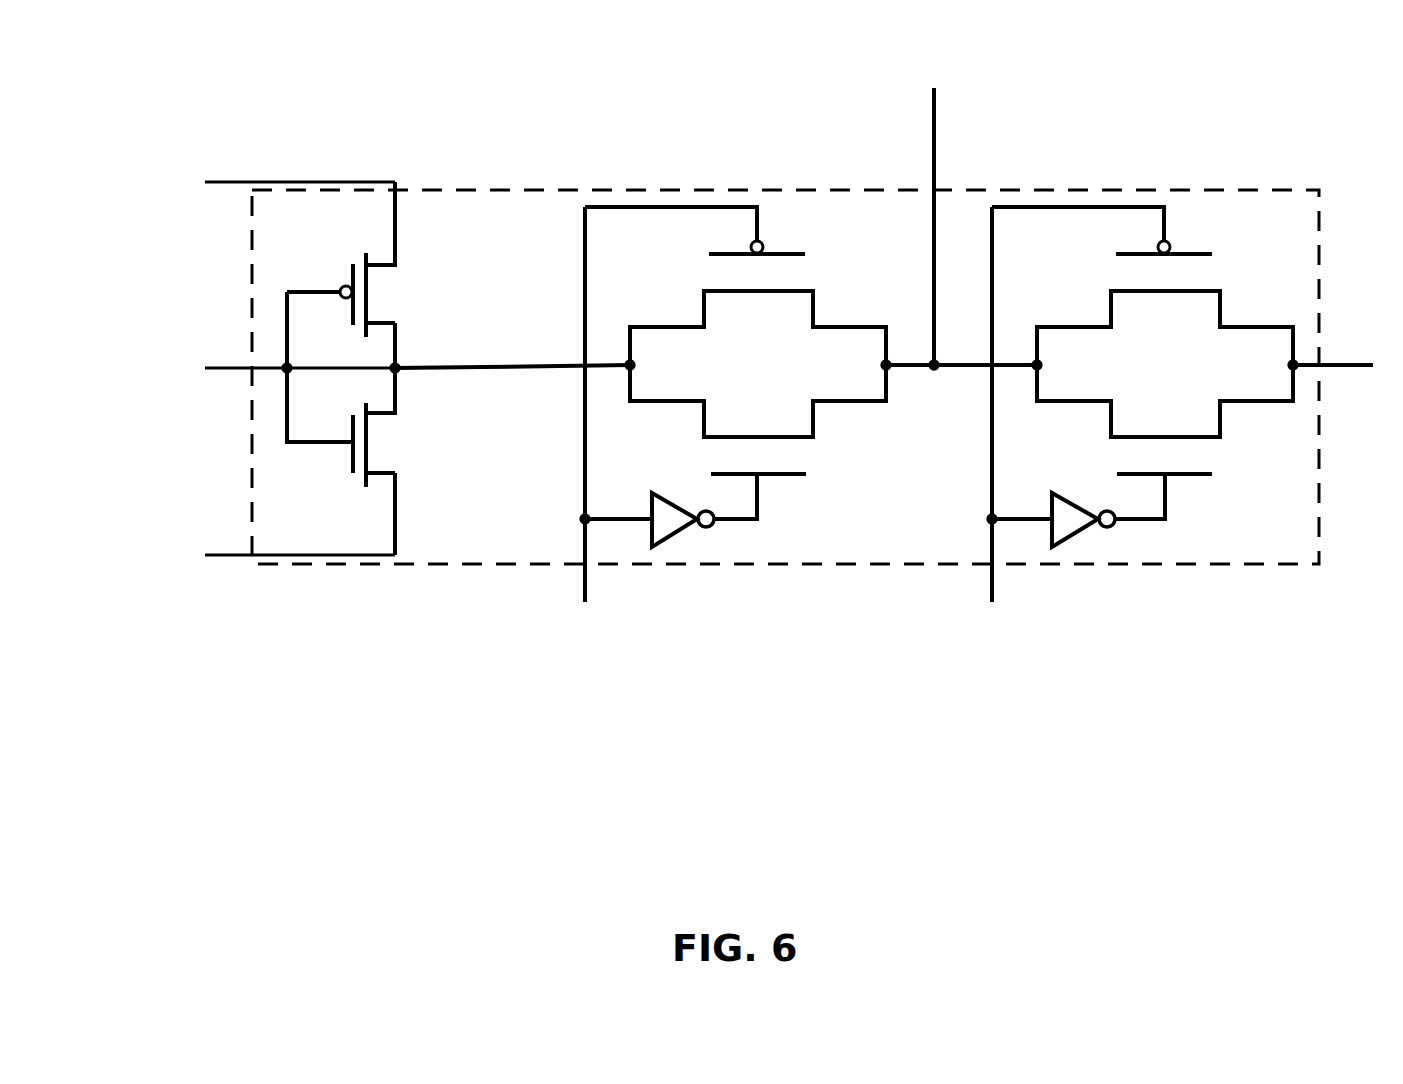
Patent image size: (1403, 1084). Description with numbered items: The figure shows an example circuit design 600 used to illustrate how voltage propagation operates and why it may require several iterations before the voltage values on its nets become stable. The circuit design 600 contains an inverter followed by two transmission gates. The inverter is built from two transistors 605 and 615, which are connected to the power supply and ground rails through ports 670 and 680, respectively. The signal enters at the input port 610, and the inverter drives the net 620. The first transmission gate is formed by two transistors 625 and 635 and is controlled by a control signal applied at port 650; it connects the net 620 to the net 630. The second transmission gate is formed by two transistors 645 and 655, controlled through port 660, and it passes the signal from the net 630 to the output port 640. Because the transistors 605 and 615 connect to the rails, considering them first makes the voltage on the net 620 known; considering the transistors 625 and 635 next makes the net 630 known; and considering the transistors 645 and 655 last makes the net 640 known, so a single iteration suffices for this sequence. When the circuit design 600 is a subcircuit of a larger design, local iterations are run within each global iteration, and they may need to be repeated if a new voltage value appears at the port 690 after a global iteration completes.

The circuit design 600 is at (312, 704).
The transistor 605 is at (400, 288).
The port 610 is at (229, 359).
The transistor 615 is at (403, 458).
The net 620 is at (486, 376).
The transistor 625 is at (823, 268).
The net 630 is at (919, 376).
The transistor 635 is at (823, 467).
The port 640 is at (1315, 376).
The transistor 645 is at (1230, 260).
The port 650 is at (603, 583).
The transistor 655 is at (1220, 463).
The port 660 is at (1001, 598).
The port 670 is at (391, 160).
The port 680 is at (397, 546).
The port 690 is at (950, 100).